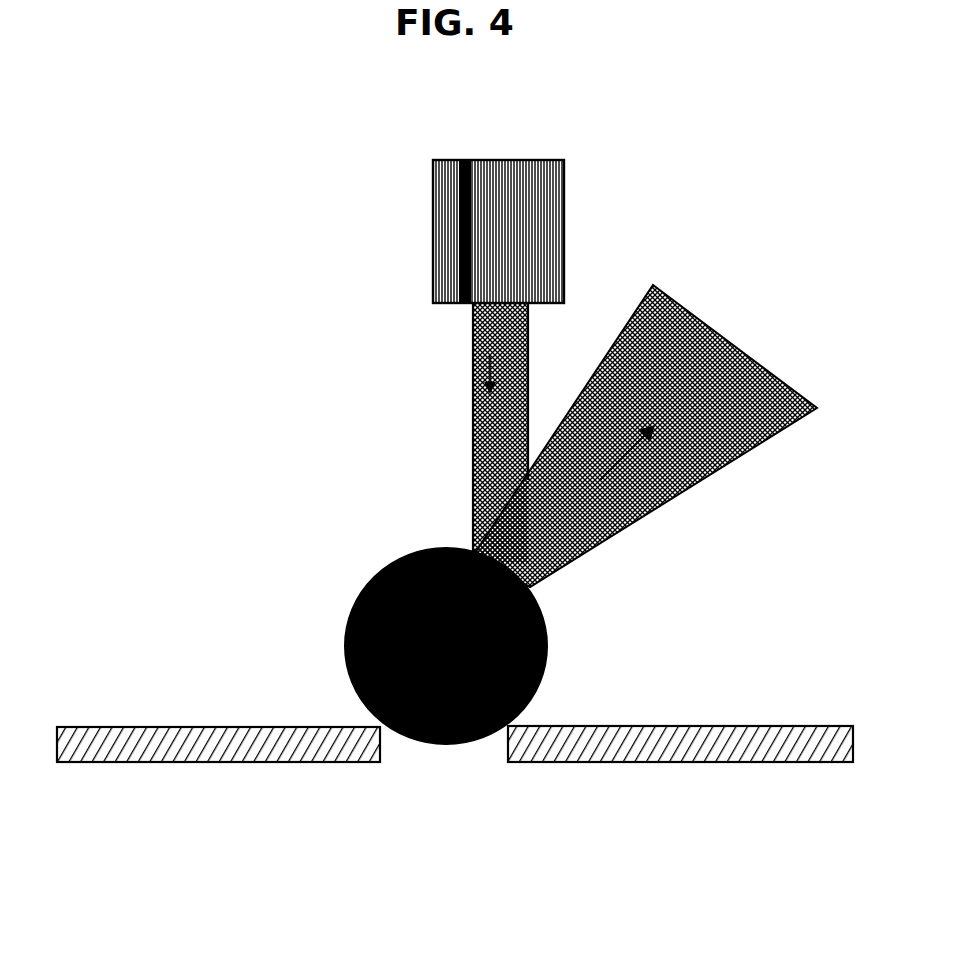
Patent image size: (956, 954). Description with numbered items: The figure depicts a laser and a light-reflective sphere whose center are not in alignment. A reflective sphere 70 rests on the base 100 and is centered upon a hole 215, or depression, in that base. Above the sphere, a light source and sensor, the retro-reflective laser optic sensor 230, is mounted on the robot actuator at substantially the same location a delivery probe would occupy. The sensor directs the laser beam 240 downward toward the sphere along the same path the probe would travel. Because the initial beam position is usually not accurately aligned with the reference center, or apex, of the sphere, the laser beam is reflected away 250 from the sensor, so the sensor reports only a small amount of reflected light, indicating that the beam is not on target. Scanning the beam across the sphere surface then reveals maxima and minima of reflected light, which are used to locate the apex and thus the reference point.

The retro-reflective laser optic sensor 230 is at (475, 222).
The laser beam 240 is at (473, 428).
The reflected laser beam 250 is at (730, 467).
The reflective sphere 70 is at (448, 635).
The base 100 is at (188, 760).
The hole 215 is at (443, 758).